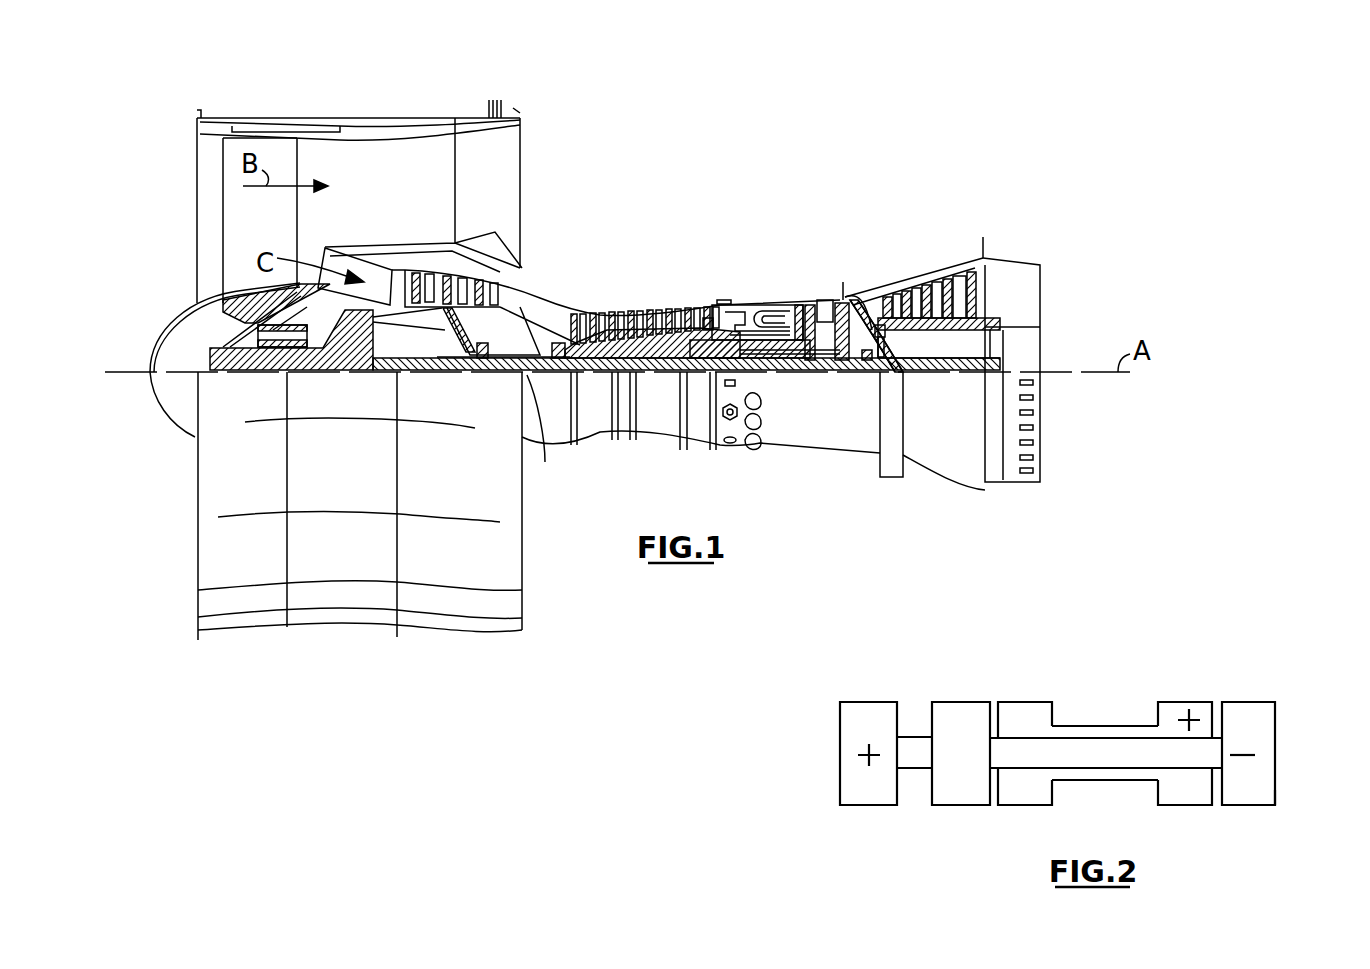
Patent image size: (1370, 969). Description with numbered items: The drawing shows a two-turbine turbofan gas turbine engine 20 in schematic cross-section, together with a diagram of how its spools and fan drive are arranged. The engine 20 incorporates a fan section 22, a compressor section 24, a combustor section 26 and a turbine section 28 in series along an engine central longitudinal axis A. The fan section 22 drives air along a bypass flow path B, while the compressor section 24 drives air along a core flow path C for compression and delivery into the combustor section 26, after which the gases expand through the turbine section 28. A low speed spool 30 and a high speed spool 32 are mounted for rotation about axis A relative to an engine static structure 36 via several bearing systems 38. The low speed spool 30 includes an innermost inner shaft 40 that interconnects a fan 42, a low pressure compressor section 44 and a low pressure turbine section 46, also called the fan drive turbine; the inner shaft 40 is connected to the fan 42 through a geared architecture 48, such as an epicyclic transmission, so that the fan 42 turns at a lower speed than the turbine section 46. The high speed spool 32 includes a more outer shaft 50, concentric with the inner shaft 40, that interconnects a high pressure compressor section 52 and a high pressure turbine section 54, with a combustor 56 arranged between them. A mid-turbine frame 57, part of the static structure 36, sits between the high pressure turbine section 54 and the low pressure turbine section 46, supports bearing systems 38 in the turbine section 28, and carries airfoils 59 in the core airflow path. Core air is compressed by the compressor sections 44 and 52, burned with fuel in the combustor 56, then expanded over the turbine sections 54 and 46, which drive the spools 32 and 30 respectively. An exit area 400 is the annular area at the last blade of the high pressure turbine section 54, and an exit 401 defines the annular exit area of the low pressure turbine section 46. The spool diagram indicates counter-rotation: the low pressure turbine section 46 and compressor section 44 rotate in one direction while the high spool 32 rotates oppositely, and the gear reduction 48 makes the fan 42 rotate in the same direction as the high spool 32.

In FIG. 1, the gas turbine engine 20 is at (780, 157).
In FIG. 1, the fan section 22 is at (296, 104).
In FIG. 1, the compressor section 24 is at (562, 290).
In FIG. 1, the combustor section 26 is at (755, 262).
In FIG. 1, the turbine section 28 is at (891, 250).
In FIG. 1, the low speed spool 30 is at (661, 380).
In FIG. 2, the low speed spool 30 is at (1027, 750).
In FIG. 1, the high speed spool 32 is at (700, 310).
In FIG. 2, the high speed spool 32 is at (1090, 733).
In FIG. 1, the engine static structure 36 is at (697, 458).
In FIG. 1, the bearing systems 38 is at (488, 368).
In FIG. 1, the inner shaft 40 is at (528, 380).
In FIG. 1, the fan 42 is at (244, 236).
In FIG. 2, the fan 42 is at (868, 712).
In FIG. 1, the low pressure compressor section 44 is at (510, 288).
In FIG. 2, the low pressure compressor section 44 is at (962, 712).
In FIG. 1, the low pressure turbine section 46 is at (936, 268).
In FIG. 2, the low pressure turbine section 46 is at (1250, 715).
In FIG. 1, the geared architecture 48 is at (372, 368).
In FIG. 2, the geared architecture 48 is at (918, 748).
In FIG. 1, the outer shaft 50 is at (770, 362).
In FIG. 1, the high pressure compressor section 52 is at (645, 343).
In FIG. 2, the high pressure compressor section 52 is at (1032, 792).
In FIG. 1, the high pressure turbine section 54 is at (842, 345).
In FIG. 2, the high pressure turbine section 54 is at (1190, 792).
In FIG. 1, the combustor 56 is at (766, 318).
In FIG. 1, the mid-turbine frame 57 is at (856, 288).
In FIG. 1, the airfoils 59 is at (886, 338).
In FIG. 1, the exit area 400 is at (843, 296).
In FIG. 2, the exit area 400 is at (1214, 718).
In FIG. 1, the exit 401 is at (983, 240).
In FIG. 2, the exit 401 is at (1275, 805).